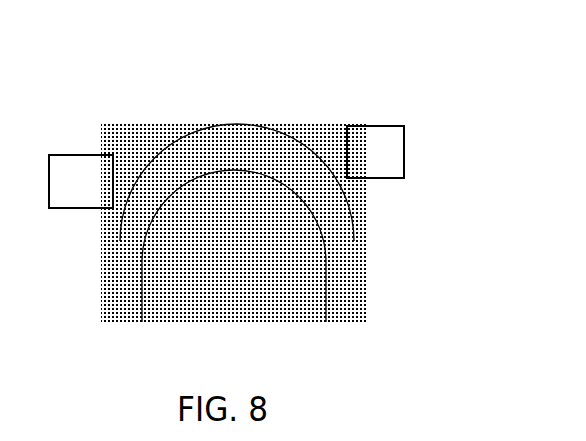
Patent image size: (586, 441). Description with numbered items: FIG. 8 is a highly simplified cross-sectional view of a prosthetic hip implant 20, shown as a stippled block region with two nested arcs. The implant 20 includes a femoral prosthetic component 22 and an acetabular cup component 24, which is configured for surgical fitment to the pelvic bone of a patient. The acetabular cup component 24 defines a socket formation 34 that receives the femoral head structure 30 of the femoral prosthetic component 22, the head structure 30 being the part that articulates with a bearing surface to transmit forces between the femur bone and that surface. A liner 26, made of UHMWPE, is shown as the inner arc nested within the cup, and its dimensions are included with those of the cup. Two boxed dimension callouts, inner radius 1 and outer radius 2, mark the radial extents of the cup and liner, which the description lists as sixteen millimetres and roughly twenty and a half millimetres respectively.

The inner radius 1 is at (292, 192).
The outer radius 2 is at (153, 167).
The prosthetic hip implant 20 is at (237, 120).
The femoral prosthetic component 22 is at (305, 300).
The acetabular cup component 24 is at (273, 153).
The liner 26 is at (328, 243).
The femoral head structure 30 is at (228, 249).
The socket formation 34 is at (142, 288).